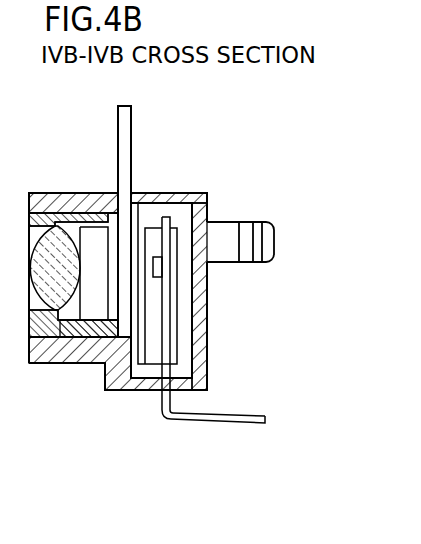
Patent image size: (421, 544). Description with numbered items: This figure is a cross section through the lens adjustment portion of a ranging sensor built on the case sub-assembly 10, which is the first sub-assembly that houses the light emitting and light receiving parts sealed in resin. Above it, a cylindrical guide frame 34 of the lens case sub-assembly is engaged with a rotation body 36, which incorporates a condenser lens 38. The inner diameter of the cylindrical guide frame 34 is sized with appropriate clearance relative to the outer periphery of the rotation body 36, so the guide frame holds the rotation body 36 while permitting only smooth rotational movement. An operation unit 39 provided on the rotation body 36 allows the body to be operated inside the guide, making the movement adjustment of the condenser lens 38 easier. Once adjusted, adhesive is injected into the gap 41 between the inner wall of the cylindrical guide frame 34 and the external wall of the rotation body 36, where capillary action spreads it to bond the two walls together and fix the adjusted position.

The case sub-assembly 10 is at (180, 217).
The cylindrical guide frame 34 is at (45, 352).
The rotation body 36 is at (70, 335).
The condenser lens 38 is at (50, 240).
The operation unit 39 is at (124, 129).
The gap 41 is at (93, 340).